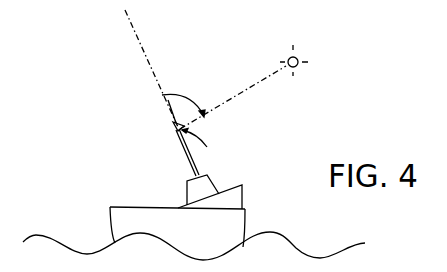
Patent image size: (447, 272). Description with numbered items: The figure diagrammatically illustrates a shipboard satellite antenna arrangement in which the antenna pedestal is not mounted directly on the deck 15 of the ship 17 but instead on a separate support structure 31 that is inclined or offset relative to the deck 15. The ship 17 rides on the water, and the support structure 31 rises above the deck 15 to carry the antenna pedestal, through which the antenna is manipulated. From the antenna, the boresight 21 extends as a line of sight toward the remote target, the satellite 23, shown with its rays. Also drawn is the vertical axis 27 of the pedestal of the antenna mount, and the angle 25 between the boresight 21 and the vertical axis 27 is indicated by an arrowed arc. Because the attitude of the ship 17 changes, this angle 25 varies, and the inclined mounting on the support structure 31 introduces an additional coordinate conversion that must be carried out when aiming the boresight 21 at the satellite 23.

The deck 15 is at (133, 207).
The ship 17 is at (108, 208).
The boresight 21 is at (265, 81).
The remote target (satellite) 23 is at (300, 56).
The angle 25 is at (188, 99).
The vertical axis 27 is at (154, 78).
The support structure 31 is at (237, 183).